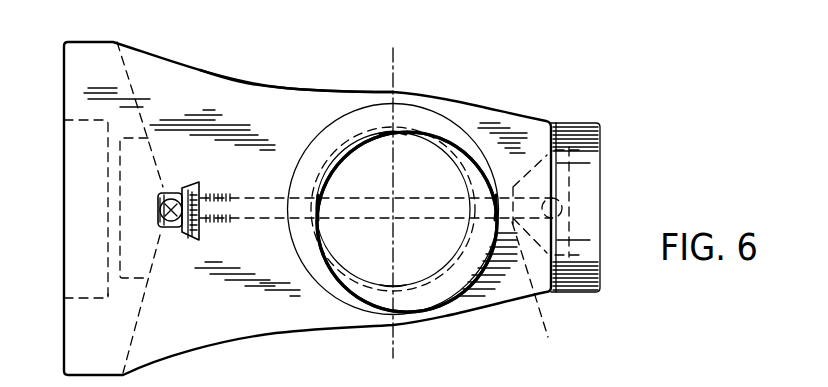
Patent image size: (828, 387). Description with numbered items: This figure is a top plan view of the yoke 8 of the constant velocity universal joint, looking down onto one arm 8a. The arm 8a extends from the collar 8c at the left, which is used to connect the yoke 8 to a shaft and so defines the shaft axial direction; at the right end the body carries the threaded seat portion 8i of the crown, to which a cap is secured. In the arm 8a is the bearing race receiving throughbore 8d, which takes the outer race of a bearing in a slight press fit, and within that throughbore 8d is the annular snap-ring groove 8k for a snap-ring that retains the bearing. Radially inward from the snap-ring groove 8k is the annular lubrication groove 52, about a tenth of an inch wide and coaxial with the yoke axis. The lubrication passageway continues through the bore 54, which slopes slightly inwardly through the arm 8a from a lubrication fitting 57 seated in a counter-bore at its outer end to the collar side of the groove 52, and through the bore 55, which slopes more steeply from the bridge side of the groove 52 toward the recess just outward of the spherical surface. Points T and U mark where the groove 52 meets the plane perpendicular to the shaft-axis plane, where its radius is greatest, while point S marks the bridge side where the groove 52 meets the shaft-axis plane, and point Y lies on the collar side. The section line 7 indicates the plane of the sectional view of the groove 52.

The yoke 8 is at (197, 73).
The arm 8a is at (310, 90).
The collar 8c is at (84, 41).
The bearing race receiving throughbore 8d is at (329, 245).
The seat portion 8i is at (587, 291).
The annular groove 8k is at (437, 167).
The section line 7- 7 is at (393, 343).
The annular groove 52 is at (452, 153).
The bore 54 is at (262, 237).
The bore 55 is at (551, 246).
The lubrication fitting 57 is at (172, 226).
The point T is at (392, 132).
The point S is at (470, 208).
The side point Y is at (313, 208).
The point U is at (393, 289).